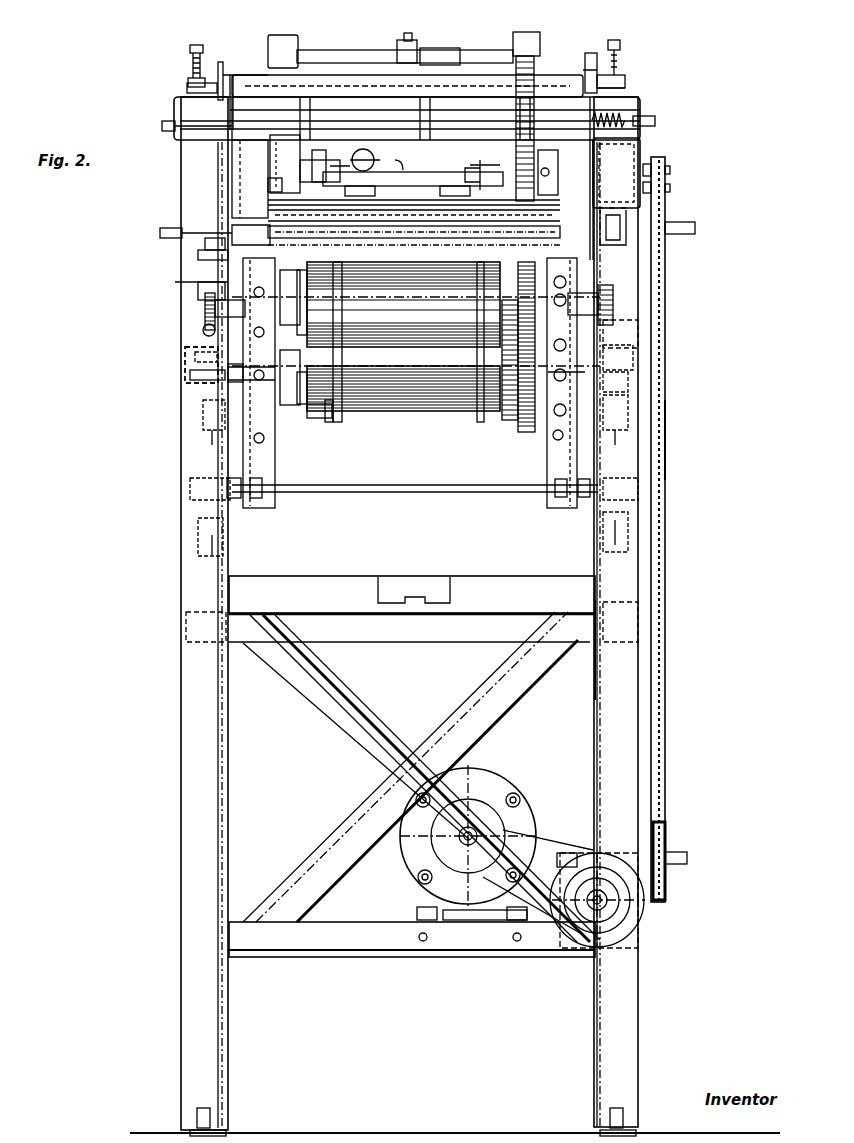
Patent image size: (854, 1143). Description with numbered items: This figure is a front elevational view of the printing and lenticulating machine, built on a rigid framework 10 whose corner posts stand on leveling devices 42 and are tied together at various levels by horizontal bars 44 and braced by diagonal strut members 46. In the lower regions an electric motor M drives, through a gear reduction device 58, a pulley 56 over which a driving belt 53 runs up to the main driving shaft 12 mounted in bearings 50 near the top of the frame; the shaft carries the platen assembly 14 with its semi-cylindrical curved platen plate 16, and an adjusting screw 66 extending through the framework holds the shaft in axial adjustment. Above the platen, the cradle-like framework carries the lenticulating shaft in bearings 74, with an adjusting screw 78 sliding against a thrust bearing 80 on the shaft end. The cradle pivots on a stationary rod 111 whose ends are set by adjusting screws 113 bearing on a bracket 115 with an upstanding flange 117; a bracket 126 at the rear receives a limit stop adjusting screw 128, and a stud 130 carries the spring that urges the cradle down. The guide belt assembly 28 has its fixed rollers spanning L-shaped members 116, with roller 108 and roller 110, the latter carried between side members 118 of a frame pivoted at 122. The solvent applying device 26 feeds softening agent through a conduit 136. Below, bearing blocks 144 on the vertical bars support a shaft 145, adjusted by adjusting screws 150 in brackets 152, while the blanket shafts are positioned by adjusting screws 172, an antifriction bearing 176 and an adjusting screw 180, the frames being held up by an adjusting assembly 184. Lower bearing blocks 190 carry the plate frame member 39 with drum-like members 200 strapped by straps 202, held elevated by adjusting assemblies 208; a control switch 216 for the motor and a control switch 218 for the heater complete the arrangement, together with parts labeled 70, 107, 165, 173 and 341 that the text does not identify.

The framework 10 is at (180, 765).
The main driving shaft 12 is at (690, 220).
The platen assembly 14 is at (425, 268).
The curved platen plate 16 is at (420, 214).
The solvent applying device 26 is at (270, 152).
The guide belt assembly 28 is at (390, 50).
The plate assembly carrying frame member 39 is at (262, 457).
The leveling devices 42 is at (197, 1114).
The horizontal bars 44 is at (186, 332).
The diagonal strut members 46 is at (428, 587).
The bearings 50 is at (409, 222).
The driving belt 53 is at (665, 442).
The pulley 56 is at (667, 847).
The gear reduction device 58 is at (640, 907).
The adjusting screw 66 is at (172, 234).
The channel 70 is at (648, 624).
The bearings 74 is at (232, 145).
The adjusting screw 78 is at (162, 126).
The thrust bearing 80 is at (407, 118).
The bar 107 is at (365, 83).
The roller 108 is at (470, 172).
The roller 110 is at (636, 104).
The stationary rod 111 is at (188, 80).
The adjusting screws 113 is at (190, 47).
The bracket 115 is at (187, 88).
The L-shaped members 116 is at (285, 45).
The upstanding flange 117 is at (245, 52).
The side members 118 is at (536, 160).
The pivot 122 is at (562, 177).
The bracket 126 is at (412, 40).
The limit stop adjusting screw 128 is at (410, 59).
The stud 130 is at (418, 42).
The conduit 136 is at (320, 159).
The bearing blocks 144 is at (195, 397).
The shaft 145 is at (628, 382).
The adjusting screws 150 is at (203, 427).
The brackets 152 is at (203, 412).
The tie rod 165 is at (300, 414).
The adjusting screws 172 is at (290, 270).
The bolt 173 is at (563, 295).
The antifriction bearing 176 is at (566, 376).
The adjusting screw 180 is at (198, 255).
The adjusting assembly 184 is at (365, 212).
The bearing blocks 190 is at (190, 487).
The drum-like members 200 is at (330, 422).
The straps 202 is at (325, 414).
The adjusting assemblies 208 is at (205, 295).
The control switch 216 is at (670, 188).
The control switch 218 is at (670, 171).
The lower roller 341 is at (430, 350).
The electric motor M is at (411, 867).